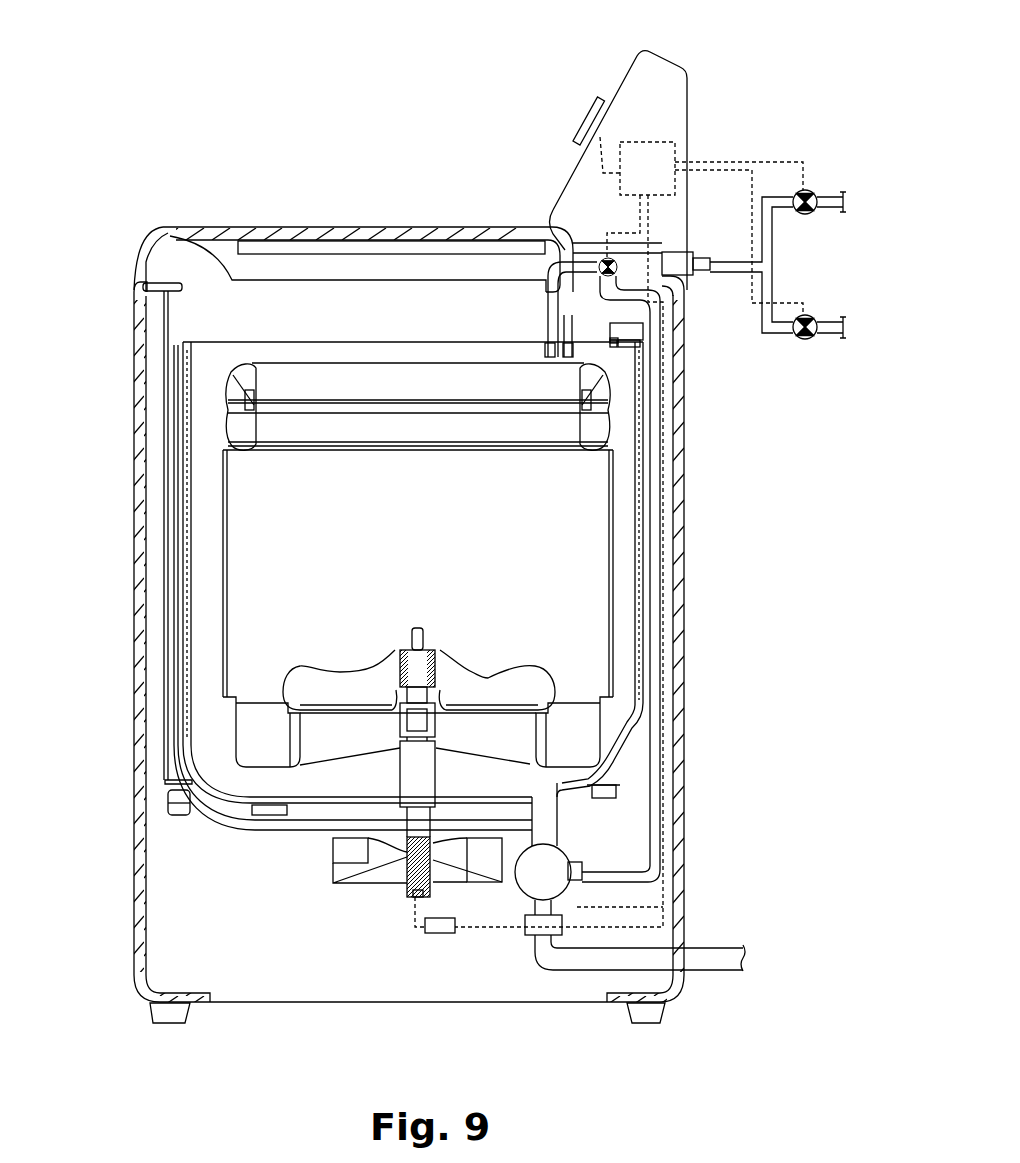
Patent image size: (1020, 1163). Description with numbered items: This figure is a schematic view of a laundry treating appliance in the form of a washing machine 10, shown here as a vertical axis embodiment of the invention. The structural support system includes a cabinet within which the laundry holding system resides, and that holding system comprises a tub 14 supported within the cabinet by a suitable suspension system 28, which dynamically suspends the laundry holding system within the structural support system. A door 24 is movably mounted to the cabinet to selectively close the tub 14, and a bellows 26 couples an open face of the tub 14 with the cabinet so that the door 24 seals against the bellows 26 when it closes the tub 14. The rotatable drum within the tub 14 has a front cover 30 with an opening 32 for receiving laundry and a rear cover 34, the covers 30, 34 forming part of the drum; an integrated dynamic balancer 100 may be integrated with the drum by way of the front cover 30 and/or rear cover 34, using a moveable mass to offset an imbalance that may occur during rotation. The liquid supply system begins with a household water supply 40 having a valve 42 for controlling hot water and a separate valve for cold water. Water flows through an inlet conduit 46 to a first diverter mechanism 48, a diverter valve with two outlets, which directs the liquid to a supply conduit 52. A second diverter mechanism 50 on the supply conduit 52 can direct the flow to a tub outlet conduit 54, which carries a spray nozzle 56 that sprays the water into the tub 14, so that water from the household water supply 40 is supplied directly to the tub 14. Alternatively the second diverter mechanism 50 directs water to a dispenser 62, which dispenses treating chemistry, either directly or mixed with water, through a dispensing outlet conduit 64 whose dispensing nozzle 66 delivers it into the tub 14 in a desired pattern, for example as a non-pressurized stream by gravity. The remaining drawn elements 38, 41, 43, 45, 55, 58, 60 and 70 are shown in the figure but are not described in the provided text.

The washing machine 10 is at (102, 134).
The tub 14 is at (122, 270).
The door 24 is at (617, 83).
The bellows 26 is at (572, 130).
The suspension system 28 is at (330, 226).
The front cover 30 is at (222, 545).
The opening 32 is at (377, 495).
The rear cover 34 is at (185, 453).
The agitation element (impeller) 38 is at (488, 690).
The household water supply 40 is at (470, 878).
The drive shaft assembly 41 is at (408, 768).
The valve 42 is at (262, 815).
The sensor 43 is at (443, 935).
The hot water supply 45 is at (835, 199).
The inlet conduit 46 is at (832, 337).
The first diverter mechanism 48 is at (807, 215).
The second diverter mechanism 50 is at (806, 341).
The supply conduit 52 is at (733, 264).
The tub outlet conduit 54 is at (642, 333).
The dispensing valve 55 is at (603, 255).
The spray nozzle 56 is at (638, 304).
The additive dispenser 58 is at (553, 305).
The drain conduit 60 is at (545, 786).
The dispenser 62 is at (535, 883).
The dispensing outlet conduit 64 is at (712, 962).
The dispensing nozzle 66 is at (658, 622).
The controller 70 is at (655, 145).
The integrated dynamic balancer 100 is at (229, 372).